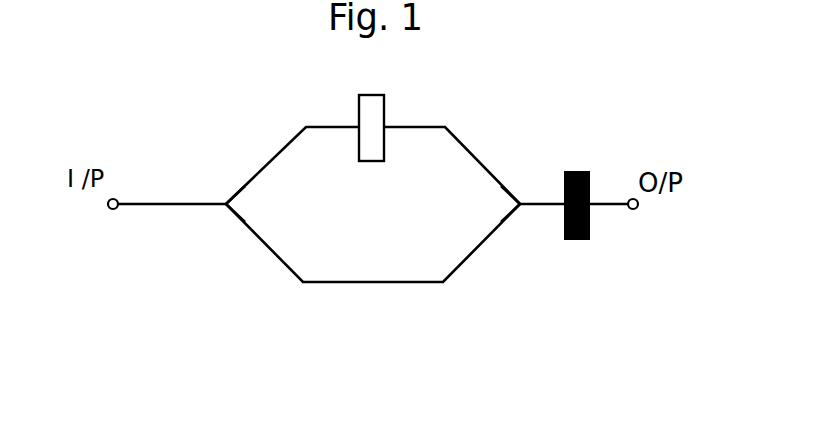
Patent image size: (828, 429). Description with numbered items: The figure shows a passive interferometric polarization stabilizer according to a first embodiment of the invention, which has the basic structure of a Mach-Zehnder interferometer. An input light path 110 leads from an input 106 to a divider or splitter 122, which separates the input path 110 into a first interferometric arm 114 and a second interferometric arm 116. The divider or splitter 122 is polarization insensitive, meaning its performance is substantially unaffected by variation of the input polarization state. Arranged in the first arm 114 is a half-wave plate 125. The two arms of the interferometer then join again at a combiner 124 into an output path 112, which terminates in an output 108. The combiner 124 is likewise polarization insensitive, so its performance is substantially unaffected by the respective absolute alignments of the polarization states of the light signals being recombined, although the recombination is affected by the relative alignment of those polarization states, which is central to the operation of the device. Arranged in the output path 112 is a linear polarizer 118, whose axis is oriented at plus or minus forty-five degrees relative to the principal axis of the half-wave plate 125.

The input 106 is at (113, 209).
The output 108 is at (634, 210).
The input light path 110 is at (174, 207).
The output path 112 is at (605, 208).
The first interferometric arm 114 is at (275, 157).
The second interferometric arm 116 is at (334, 284).
The linear polarizer 118 is at (575, 241).
The divider or splitter 122 is at (227, 210).
The combiner 124 is at (521, 204).
The half-wave plate 125 is at (385, 114).